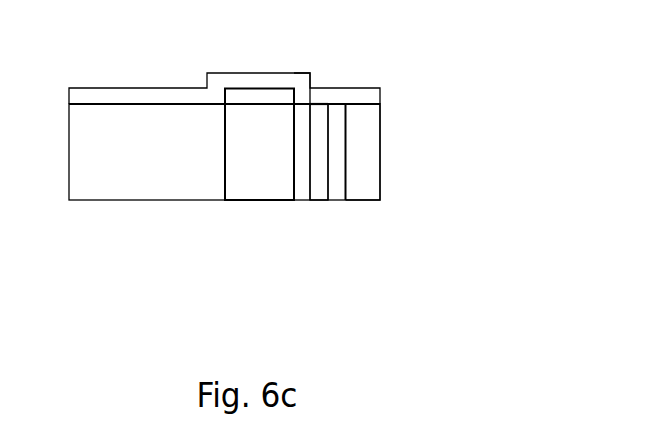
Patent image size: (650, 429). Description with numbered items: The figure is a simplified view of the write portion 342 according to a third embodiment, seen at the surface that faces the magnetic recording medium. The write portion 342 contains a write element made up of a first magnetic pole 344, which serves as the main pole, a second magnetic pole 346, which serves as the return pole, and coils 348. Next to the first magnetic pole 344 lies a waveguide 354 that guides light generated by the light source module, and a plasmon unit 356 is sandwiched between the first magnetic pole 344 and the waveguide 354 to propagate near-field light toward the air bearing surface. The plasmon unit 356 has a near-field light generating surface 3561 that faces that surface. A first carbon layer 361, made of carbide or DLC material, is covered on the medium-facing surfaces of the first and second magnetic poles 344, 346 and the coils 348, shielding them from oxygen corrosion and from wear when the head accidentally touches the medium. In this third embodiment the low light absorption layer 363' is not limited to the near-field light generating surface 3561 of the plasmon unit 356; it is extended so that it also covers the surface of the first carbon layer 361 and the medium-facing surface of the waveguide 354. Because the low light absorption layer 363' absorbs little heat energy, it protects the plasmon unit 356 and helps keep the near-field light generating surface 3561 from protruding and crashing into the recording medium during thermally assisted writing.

The write portion 342 is at (367, 275).
The first magnetic pole 344 is at (265, 188).
The second magnetic pole 346 is at (224, 88).
The coils 348 is at (319, 152).
The waveguide 354 is at (365, 187).
The plasmon unit 356 is at (322, 190).
The near-field light generating surface 3561 is at (318, 105).
The first carbon layer 361 is at (253, 95).
The low light absorption layer 363' is at (319, 67).